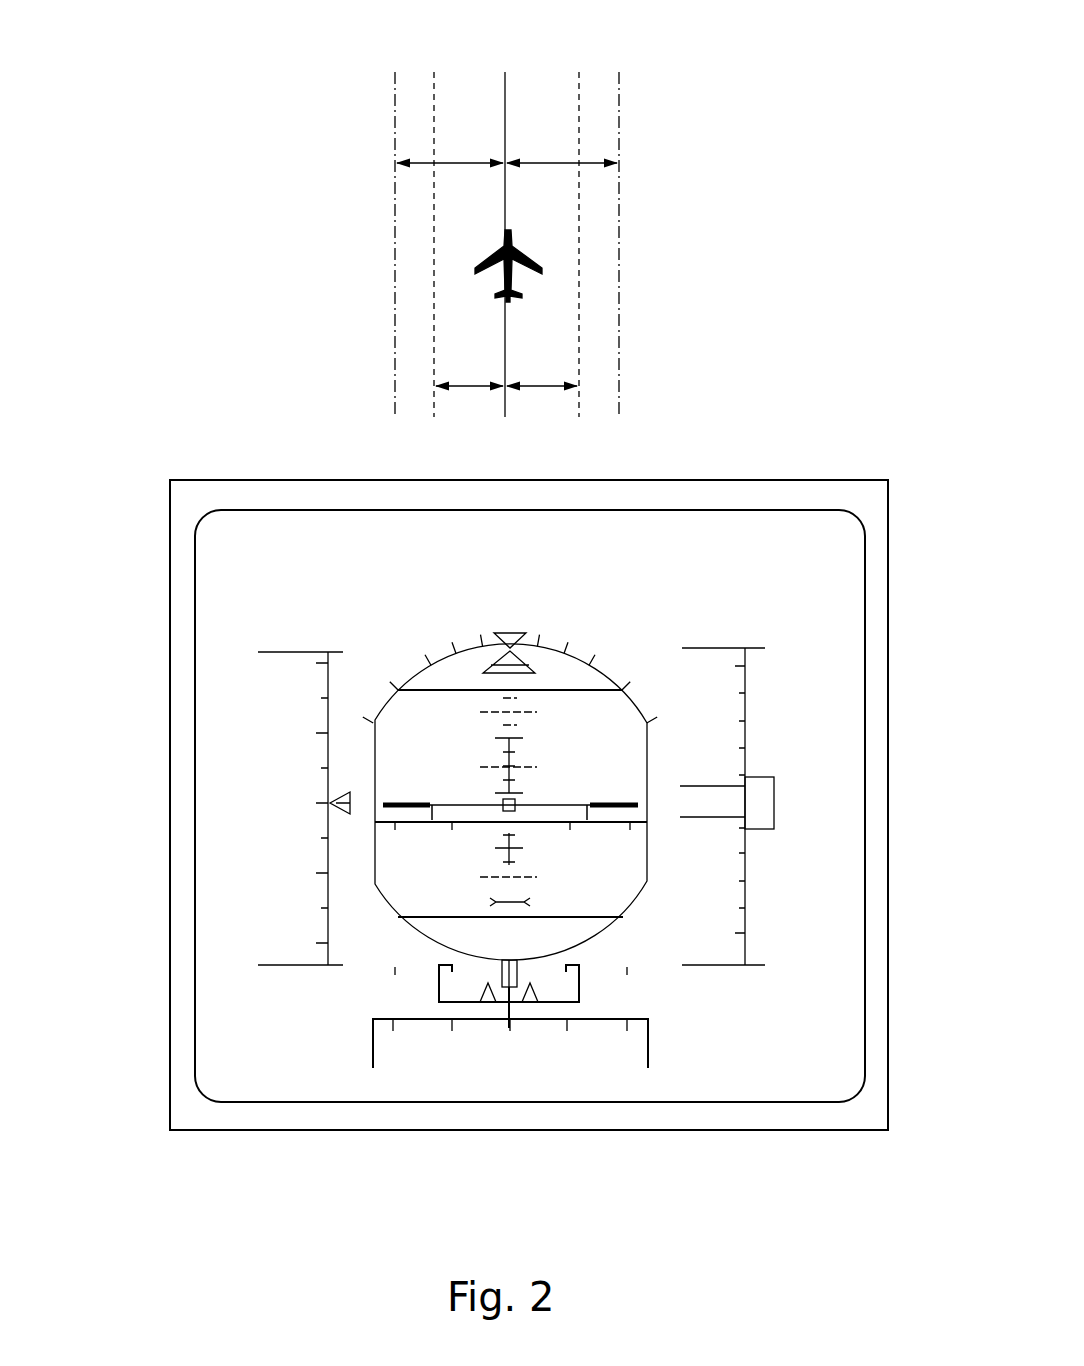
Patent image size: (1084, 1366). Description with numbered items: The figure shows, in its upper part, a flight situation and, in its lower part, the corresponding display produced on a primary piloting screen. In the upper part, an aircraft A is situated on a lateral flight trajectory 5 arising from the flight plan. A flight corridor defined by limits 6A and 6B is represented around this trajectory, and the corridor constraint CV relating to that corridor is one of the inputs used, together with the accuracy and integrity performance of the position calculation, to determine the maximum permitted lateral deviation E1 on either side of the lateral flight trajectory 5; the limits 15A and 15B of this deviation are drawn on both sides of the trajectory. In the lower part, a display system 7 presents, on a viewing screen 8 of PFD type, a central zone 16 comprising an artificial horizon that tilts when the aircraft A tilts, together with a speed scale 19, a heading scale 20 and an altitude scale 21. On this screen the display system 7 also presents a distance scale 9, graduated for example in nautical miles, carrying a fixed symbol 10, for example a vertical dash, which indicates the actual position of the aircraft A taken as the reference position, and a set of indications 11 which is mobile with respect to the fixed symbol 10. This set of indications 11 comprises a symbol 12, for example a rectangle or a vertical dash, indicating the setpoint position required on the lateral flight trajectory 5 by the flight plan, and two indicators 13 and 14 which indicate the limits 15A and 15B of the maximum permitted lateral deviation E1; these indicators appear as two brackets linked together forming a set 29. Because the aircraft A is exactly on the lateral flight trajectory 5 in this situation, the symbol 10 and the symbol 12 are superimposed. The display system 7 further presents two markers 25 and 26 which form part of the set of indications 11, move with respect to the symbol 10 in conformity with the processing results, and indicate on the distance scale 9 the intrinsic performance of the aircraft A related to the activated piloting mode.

The lateral flight trajectory 5 is at (505, 100).
The limit 6A is at (395, 292).
The limit 6B is at (619, 258).
The limit 15A is at (434, 103).
The limit 15B is at (579, 100).
The corridor constraint CV is at (456, 161).
The maximum permitted lateral deviation E1 is at (470, 384).
The aircraft A is at (511, 270).
The display system 7 is at (205, 1170).
The viewing screen 8 is at (616, 1118).
The distance scale 9 is at (370, 978).
The symbol 10 is at (506, 1031).
The set of indications 11 is at (602, 960).
The symbol 12 is at (496, 962).
The indicator 13 is at (430, 988).
The indicator 14 is at (592, 978).
The central zone 16 is at (418, 648).
The speed scale 19 is at (297, 640).
The heading scale 20 is at (360, 1050).
The altitude scale 21 is at (736, 612).
The marker 25 is at (487, 1006).
The marker 26 is at (533, 1006).
The set 29 is at (605, 998).